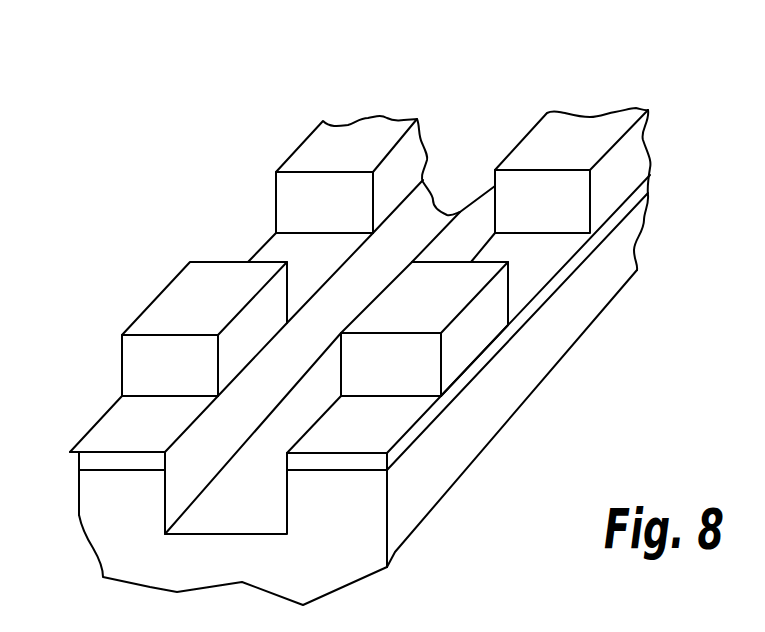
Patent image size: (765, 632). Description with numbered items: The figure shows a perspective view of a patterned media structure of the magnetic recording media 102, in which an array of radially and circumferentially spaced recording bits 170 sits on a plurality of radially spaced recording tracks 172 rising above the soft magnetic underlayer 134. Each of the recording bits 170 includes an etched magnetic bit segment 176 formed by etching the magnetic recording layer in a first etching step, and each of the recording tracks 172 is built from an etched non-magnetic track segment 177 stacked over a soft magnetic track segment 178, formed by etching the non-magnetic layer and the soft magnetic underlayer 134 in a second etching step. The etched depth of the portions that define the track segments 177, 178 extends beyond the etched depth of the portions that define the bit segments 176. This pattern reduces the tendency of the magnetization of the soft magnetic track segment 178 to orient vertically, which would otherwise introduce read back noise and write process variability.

The media 102 is at (672, 202).
The soft magnetic underlayer 134 is at (323, 568).
The recording bits 170 is at (353, 147).
The recording tracks 172 is at (113, 420).
The magnetic bit segment 176 is at (142, 357).
The non-magnetic track segment 177 is at (97, 461).
The soft magnetic track segment 178 is at (113, 493).